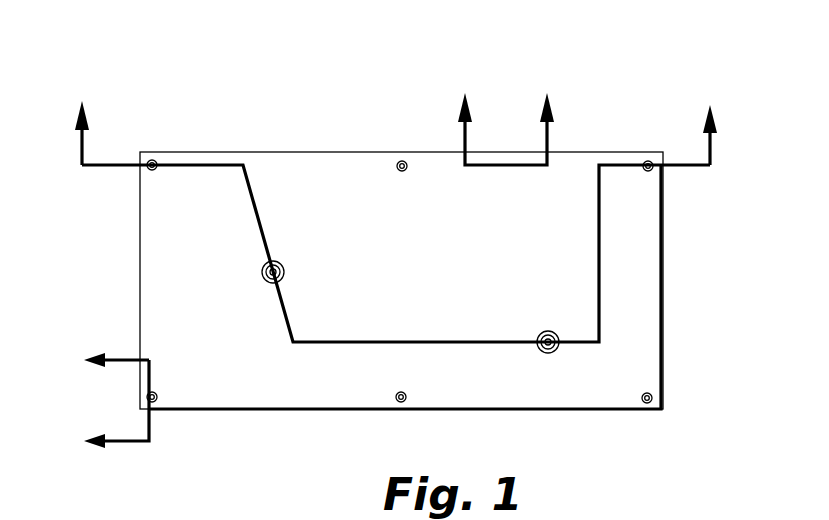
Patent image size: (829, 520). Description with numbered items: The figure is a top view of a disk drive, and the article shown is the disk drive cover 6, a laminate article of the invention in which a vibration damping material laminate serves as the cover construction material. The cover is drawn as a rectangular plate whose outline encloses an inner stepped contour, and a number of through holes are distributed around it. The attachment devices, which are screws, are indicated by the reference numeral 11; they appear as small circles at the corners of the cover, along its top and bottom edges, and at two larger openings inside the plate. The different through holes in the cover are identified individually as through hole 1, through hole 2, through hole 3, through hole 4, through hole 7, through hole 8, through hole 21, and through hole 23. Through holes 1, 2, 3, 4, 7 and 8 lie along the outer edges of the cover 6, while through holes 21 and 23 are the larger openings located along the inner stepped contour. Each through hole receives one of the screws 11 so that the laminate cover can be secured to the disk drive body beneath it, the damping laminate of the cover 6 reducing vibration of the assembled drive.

The through hole 1 is at (169, 413).
The through hole 2 is at (383, 413).
The through hole 3 is at (629, 413).
The through hole 4 is at (639, 151).
The disk drive cover 6 is at (324, 52).
The through hole 7 is at (392, 150).
The through hole 8 is at (166, 146).
The attachment devices (screws) 11 is at (156, 172).
The through hole 21 is at (286, 254).
The through hole 23 is at (538, 328).